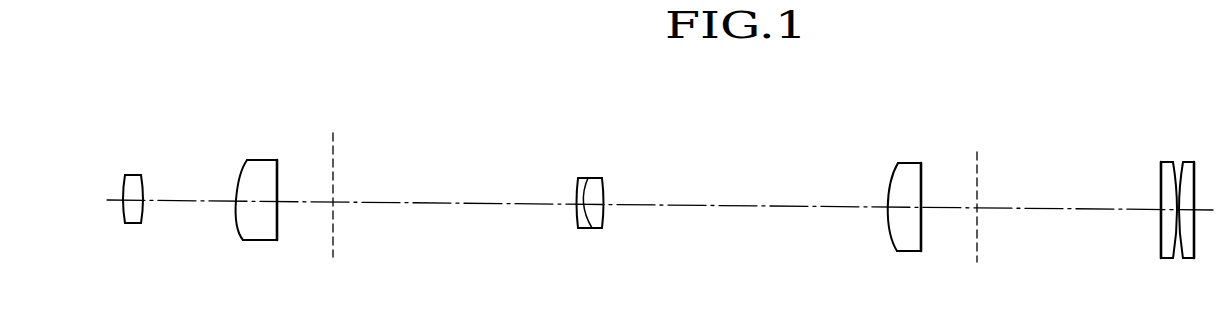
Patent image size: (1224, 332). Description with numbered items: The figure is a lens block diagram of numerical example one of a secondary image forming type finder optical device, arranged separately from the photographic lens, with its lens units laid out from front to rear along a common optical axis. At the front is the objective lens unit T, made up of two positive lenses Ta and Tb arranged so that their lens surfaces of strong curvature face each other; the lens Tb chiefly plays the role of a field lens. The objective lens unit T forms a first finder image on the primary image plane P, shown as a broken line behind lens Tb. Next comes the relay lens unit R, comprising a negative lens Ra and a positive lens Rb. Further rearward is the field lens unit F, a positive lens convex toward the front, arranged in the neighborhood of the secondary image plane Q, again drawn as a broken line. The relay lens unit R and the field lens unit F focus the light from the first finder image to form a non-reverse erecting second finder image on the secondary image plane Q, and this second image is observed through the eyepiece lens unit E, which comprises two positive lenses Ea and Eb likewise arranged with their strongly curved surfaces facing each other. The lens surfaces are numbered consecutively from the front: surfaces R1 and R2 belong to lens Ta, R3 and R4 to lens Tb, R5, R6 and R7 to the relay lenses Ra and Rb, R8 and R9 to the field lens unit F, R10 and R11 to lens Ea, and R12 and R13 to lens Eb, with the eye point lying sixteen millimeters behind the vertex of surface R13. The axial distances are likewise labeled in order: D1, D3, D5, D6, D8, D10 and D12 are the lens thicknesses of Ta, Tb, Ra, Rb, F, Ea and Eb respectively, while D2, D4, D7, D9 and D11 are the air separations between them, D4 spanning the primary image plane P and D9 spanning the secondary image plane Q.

The objective lens unit T is at (272, 64).
The positive lens Ta is at (107, 104).
The positive lens Tb is at (298, 104).
The relay lens unit R is at (553, 69).
The negative lens Ra is at (547, 107).
The positive lens Rb is at (635, 107).
The field lens unit F is at (942, 109).
The eyepiece lens unit E is at (1122, 46).
The positive lens Ea is at (1165, 78).
The positive lens Eb is at (1222, 86).
The primary image plane P is at (333, 153).
The secondary image plane Q is at (977, 178).
The first lens surface R1 is at (125, 179).
The second lens surface R2 is at (142, 179).
The third lens surface R3 is at (245, 165).
The fourth lens surface R4 is at (277, 170).
The fifth lens surface R5 is at (576, 181).
The sixth lens surface R6 is at (588, 178).
The seventh lens surface R7 is at (603, 180).
The eighth lens surface R8 is at (898, 167).
The ninth lens surface R9 is at (921, 170).
The tenth lens surface R10 is at (1161, 170).
The eleventh lens surface R11 is at (1172, 165).
The twelfth lens surface R12 is at (1183, 163).
The thirteenth lens surface R13 is at (1194, 166).
The first lens thickness D1 is at (130, 200).
The second air separation D2 is at (192, 201).
The third lens thickness D3 is at (257, 201).
The fourth air separation D4 is at (442, 203).
The fifth lens thickness D5 is at (581, 204).
The sixth lens thickness D6 is at (597, 204).
The seventh air separation D7 is at (748, 206).
The eighth lens thickness D8 is at (905, 207).
The ninth air separation D9 is at (1025, 208).
The tenth lens thickness D10 is at (1167, 232).
The eleventh air separation D11 is at (1177, 236).
The twelfth lens thickness D12 is at (1189, 232).